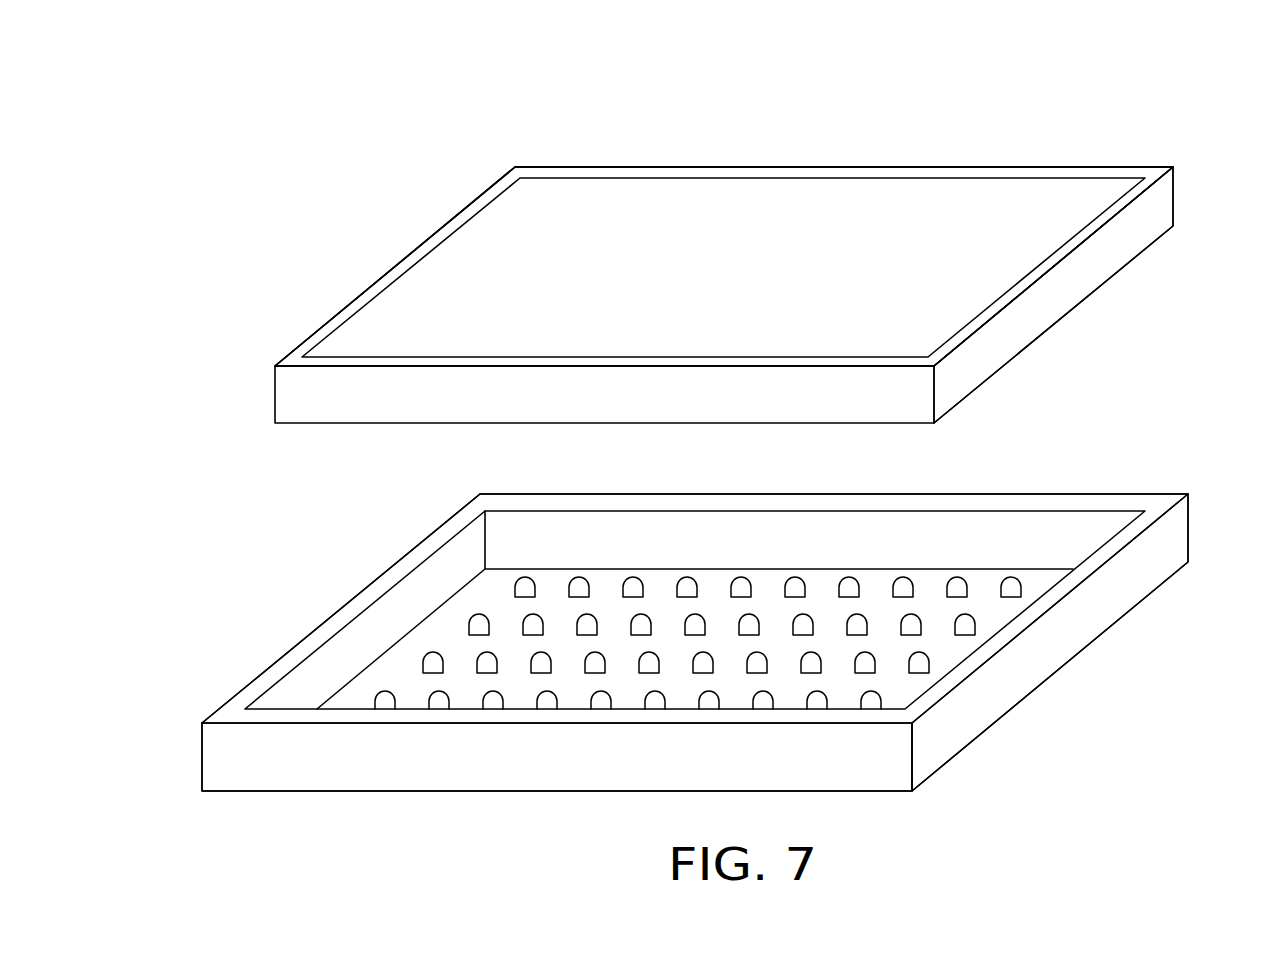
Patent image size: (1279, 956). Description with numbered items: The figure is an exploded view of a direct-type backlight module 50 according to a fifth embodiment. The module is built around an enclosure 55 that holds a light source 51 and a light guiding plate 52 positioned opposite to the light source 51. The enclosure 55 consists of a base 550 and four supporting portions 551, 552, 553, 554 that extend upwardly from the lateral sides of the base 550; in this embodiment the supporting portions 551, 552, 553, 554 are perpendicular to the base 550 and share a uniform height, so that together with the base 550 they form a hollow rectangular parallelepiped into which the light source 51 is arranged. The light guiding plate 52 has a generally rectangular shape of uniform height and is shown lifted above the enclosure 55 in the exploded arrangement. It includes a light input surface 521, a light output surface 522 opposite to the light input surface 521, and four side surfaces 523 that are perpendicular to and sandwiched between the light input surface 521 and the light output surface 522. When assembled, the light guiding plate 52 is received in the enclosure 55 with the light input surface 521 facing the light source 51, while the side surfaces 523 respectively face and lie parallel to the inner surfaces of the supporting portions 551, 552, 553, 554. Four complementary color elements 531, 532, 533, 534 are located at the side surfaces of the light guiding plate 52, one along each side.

The direct-type backlight module 50 is at (838, 89).
The light source 51 is at (917, 664).
The light guiding plate 52 is at (760, 288).
The enclosure 55 is at (707, 641).
The light input surface 521 is at (968, 397).
The light output surface 522 is at (582, 202).
The side surfaces 523 is at (733, 177).
The complementary color element 531 is at (935, 172).
The complementary color element 532 is at (1035, 275).
The complementary color element 533 is at (707, 360).
The complementary color element 534 is at (357, 305).
The base 550 is at (947, 649).
The supporting portion 551 is at (1090, 498).
The supporting portion 552 is at (1070, 627).
The supporting portion 553 is at (347, 760).
The supporting portion 554 is at (357, 606).